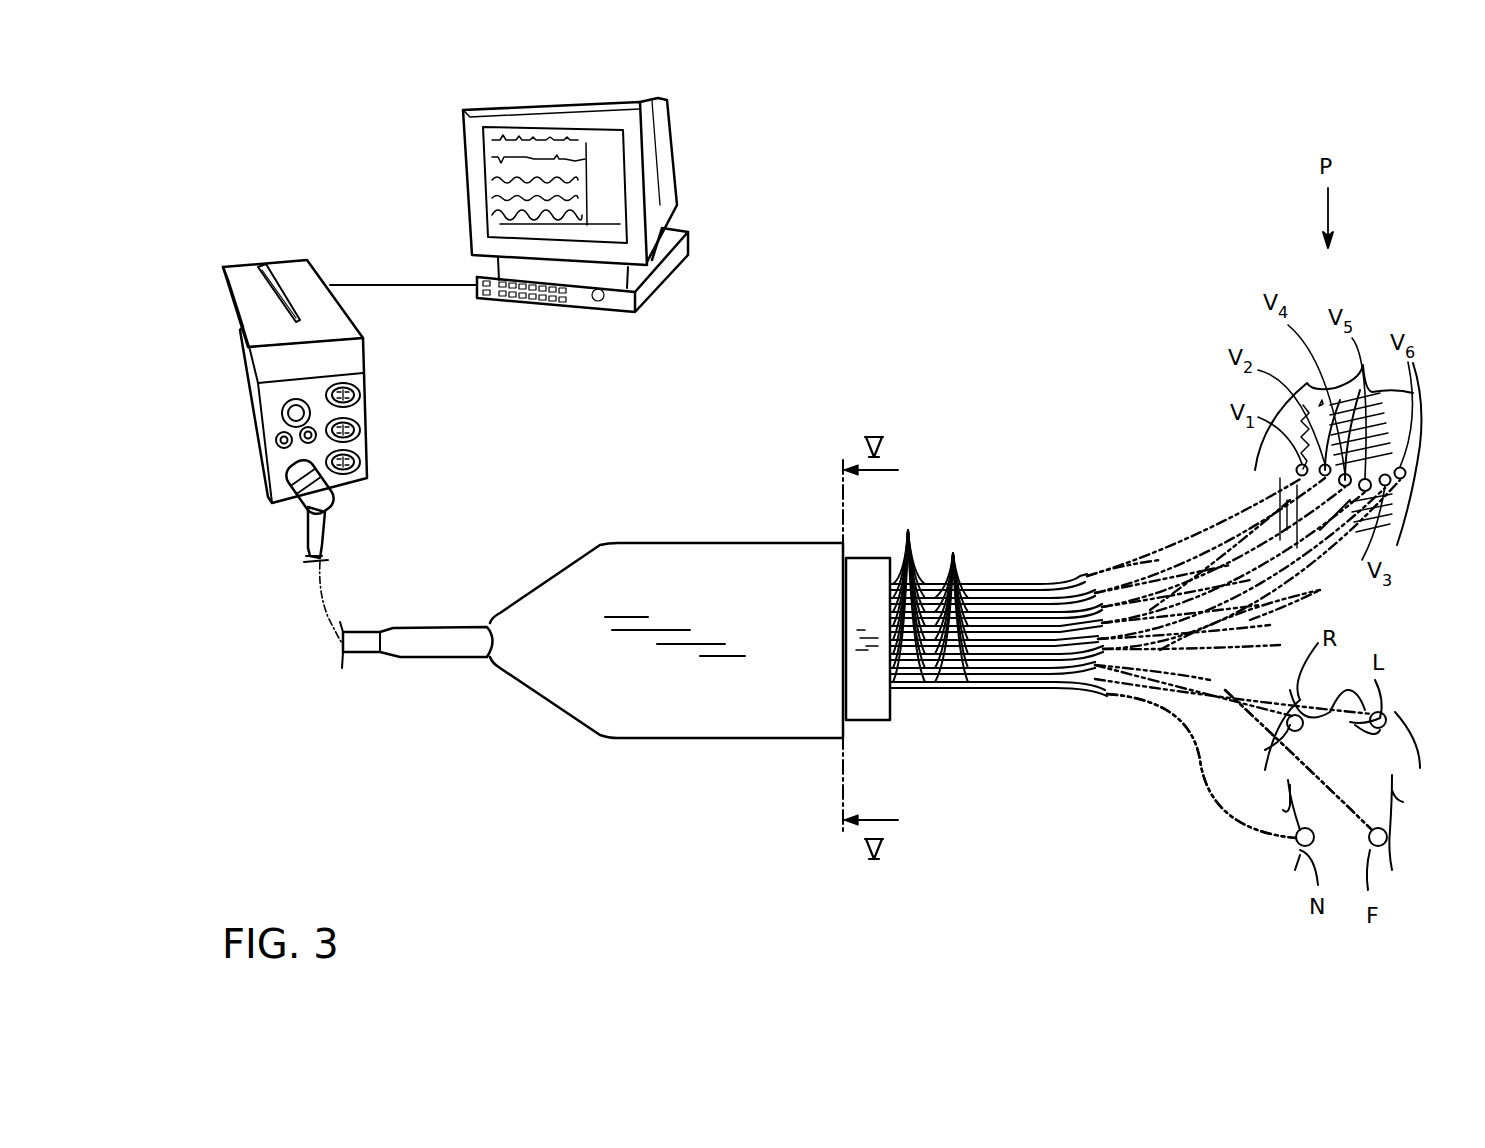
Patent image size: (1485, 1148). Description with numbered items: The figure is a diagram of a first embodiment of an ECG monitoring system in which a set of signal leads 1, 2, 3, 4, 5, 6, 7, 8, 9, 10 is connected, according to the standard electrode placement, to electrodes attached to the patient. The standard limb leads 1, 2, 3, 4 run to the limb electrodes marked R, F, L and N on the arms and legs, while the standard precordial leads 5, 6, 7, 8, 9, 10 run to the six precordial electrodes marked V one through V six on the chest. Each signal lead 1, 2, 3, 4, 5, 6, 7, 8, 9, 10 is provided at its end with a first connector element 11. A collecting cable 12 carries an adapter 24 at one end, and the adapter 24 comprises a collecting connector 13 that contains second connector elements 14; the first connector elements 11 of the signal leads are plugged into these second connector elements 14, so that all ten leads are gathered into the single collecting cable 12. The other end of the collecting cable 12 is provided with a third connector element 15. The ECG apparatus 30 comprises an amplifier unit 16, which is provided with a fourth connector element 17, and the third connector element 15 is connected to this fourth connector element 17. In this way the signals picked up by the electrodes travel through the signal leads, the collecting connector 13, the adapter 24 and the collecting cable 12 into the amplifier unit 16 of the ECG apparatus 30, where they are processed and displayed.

The ECG apparatus 30 is at (658, 285).
The amplifier unit 16 is at (368, 398).
The fourth connector element 17 is at (283, 472).
The third connector element 15 is at (301, 508).
The collecting cable 12 is at (367, 635).
The adapter 24 is at (692, 558).
The collecting connector 13 is at (868, 710).
The second connector elements 14 is at (911, 587).
The first connector element 11 is at (953, 602).
The signal lead 10 is at (1125, 700).
The signal lead 1 is at (1125, 560).
The signal lead 2 is at (1128, 605).
The signal lead 3 is at (1213, 738).
The signal lead 4 is at (1187, 709).
The signal lead 5 is at (1261, 600).
The signal lead 6 is at (1190, 574).
The signal lead 7 is at (1216, 600).
The signal lead 8 is at (1323, 583).
The signal lead 9 is at (1265, 552).